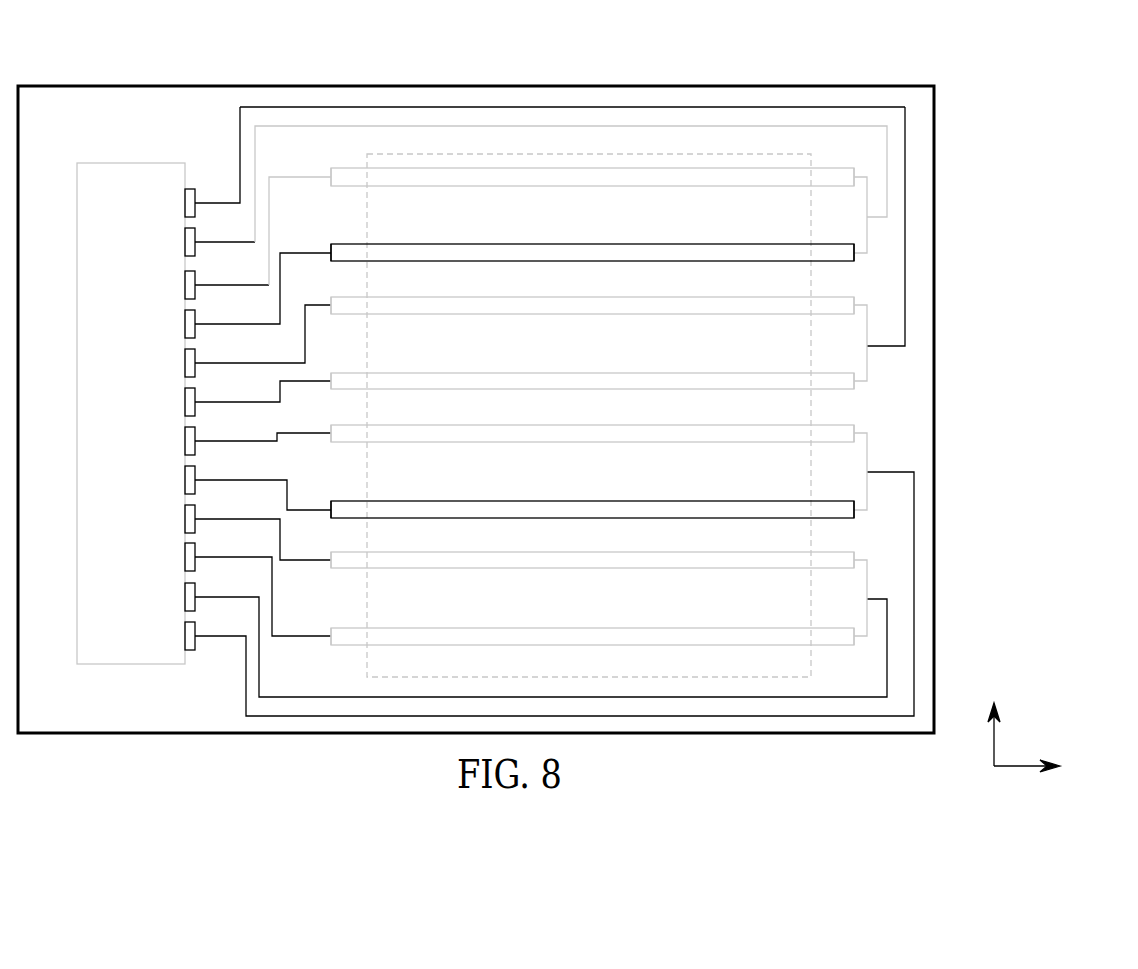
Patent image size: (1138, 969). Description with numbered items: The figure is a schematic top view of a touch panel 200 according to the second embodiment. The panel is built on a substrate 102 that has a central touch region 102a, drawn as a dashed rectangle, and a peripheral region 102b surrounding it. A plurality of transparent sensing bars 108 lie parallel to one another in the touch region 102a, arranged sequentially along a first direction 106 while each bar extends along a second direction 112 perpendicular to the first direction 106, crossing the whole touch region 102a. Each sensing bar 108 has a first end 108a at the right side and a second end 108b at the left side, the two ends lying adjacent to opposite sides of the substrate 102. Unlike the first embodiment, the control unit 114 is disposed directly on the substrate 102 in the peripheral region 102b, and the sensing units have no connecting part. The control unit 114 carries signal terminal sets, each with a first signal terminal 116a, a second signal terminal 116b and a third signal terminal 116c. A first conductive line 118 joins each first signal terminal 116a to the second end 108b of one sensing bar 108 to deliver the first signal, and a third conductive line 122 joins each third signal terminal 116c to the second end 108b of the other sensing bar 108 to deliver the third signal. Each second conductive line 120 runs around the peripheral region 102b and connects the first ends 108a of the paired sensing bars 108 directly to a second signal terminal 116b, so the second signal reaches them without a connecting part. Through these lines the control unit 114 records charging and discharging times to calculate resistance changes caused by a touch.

The touch panel 200 is at (932, 71).
The substrate 102 is at (934, 403).
The touch region 102a is at (520, 151).
The peripheral region 102b is at (654, 102).
The first direction 106 is at (993, 721).
The second direction 112 is at (1047, 766).
The sensing bar 108 is at (555, 183).
The first end 108a is at (862, 156).
The second end 108b is at (330, 170).
The control unit 114 is at (128, 162).
The first signal terminal 116a is at (184, 287).
The second signal terminal 116b is at (184, 205).
The third signal terminal 116c is at (184, 326).
The first conductive line 118 is at (260, 283).
The second conductive line 120 is at (887, 178).
The third conductive line 122 is at (260, 322).